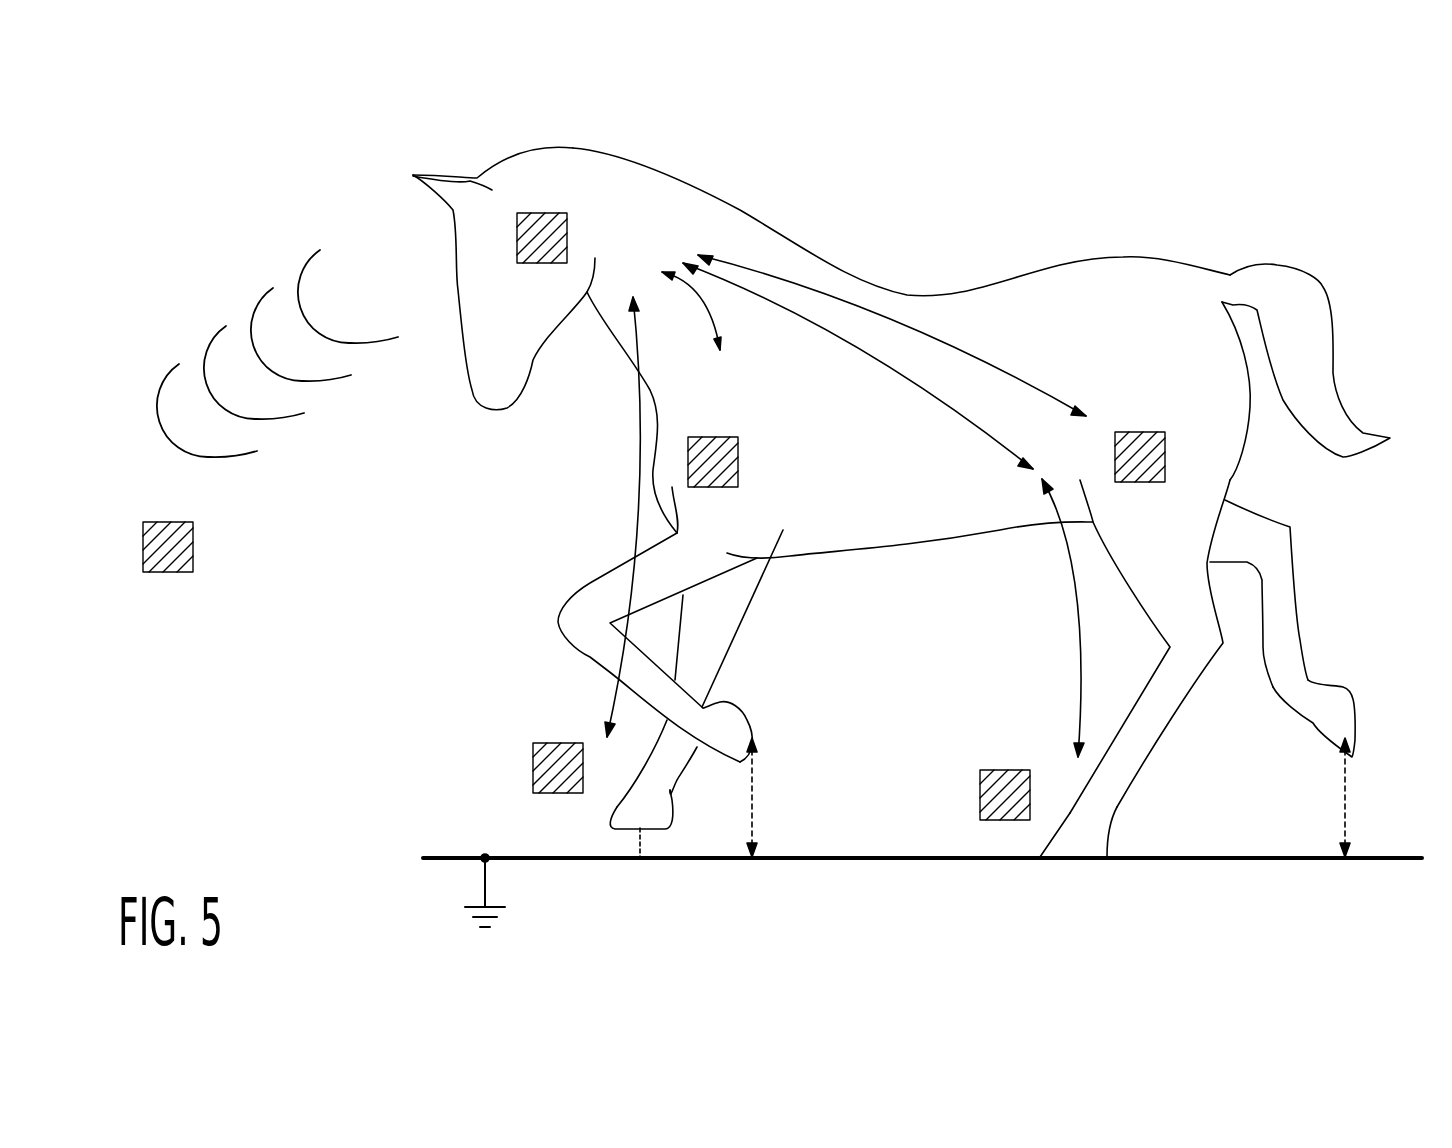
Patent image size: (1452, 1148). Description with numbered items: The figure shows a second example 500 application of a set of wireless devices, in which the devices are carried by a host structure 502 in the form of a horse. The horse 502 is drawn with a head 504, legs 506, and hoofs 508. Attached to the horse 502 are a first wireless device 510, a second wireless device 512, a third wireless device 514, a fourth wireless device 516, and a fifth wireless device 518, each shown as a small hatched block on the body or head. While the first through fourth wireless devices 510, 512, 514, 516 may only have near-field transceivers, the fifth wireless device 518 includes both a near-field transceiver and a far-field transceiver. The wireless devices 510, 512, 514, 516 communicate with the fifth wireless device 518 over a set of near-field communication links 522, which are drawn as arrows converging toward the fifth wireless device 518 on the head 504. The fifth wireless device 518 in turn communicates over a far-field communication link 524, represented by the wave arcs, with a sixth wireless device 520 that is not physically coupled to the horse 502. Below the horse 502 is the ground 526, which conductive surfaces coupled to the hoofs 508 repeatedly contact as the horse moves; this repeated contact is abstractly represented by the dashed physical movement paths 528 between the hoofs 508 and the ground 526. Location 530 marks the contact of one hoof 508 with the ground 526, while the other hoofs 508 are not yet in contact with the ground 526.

The second example application 500 is at (450, 130).
The host structure 502 is at (1140, 257).
The head 504 is at (573, 148).
The legs 506 is at (1267, 530).
The hoofs 508 is at (740, 720).
The first wireless device 510 is at (533, 765).
The second wireless device 512 is at (1005, 770).
The third wireless device 514 is at (745, 455).
The fourth wireless device 516 is at (1150, 432).
The fifth wireless device 518 is at (567, 234).
The sixth wireless device 520 is at (200, 540).
The near-field communication links 522 is at (1030, 383).
The far-field communication link 524 is at (270, 288).
The ground 526 is at (470, 920).
The physical movement paths 528 is at (753, 808).
The location 530 is at (1077, 862).